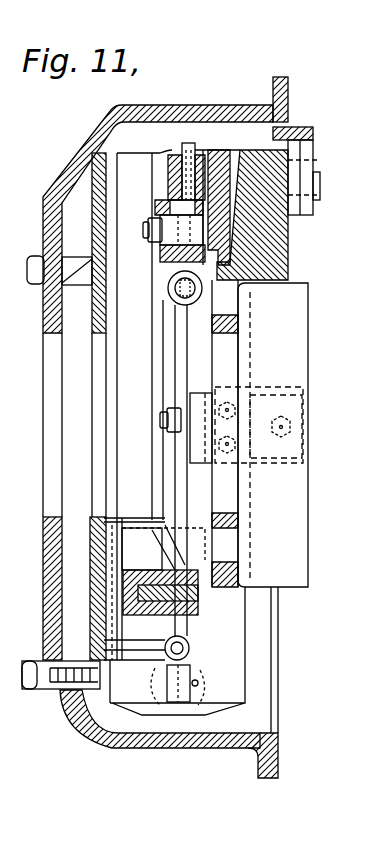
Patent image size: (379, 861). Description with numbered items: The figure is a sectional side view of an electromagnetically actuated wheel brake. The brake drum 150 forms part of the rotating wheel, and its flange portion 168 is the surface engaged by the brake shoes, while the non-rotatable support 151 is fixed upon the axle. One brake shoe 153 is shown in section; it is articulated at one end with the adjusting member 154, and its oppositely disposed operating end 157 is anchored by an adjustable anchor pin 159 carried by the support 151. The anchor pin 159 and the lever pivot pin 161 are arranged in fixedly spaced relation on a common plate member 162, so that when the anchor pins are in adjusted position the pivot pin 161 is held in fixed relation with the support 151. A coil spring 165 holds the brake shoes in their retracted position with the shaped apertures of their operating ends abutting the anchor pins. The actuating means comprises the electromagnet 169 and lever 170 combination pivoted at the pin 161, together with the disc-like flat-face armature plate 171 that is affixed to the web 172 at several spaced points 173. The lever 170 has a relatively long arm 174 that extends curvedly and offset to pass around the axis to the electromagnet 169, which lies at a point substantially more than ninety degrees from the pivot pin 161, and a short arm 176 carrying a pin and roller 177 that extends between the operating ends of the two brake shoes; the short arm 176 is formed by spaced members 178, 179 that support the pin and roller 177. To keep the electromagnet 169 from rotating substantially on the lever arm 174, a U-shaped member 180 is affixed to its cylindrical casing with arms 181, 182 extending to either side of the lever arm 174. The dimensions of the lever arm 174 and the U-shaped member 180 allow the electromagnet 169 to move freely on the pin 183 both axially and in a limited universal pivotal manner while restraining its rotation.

The brake drum 150 is at (74, 158).
The non-rotatable support 151 is at (310, 266).
The brake shoe 153 is at (122, 368).
The adjusting member 154 is at (146, 748).
The operating end 157 is at (186, 143).
The adjustable anchor pin 159 is at (320, 196).
The lever pivot pin 161 is at (180, 232).
The plate member 162 is at (255, 281).
The coil spring 165 is at (178, 300).
The flange portion 168 is at (196, 113).
The electromagnet 169 is at (134, 518).
The lever 170 is at (145, 381).
The armature plate 171 is at (107, 481).
The web 172 is at (41, 631).
The spaced points 173 is at (62, 283).
The long arm 174 is at (156, 442).
The short arm 176 is at (168, 272).
The pin and roller 177 is at (182, 187).
The spaced member 178 is at (172, 154).
The spaced member 179 is at (199, 157).
The U-shaped member 180 is at (130, 575).
The arm 181 is at (170, 538).
The arm 182 is at (181, 556).
The pin 183 is at (100, 600).